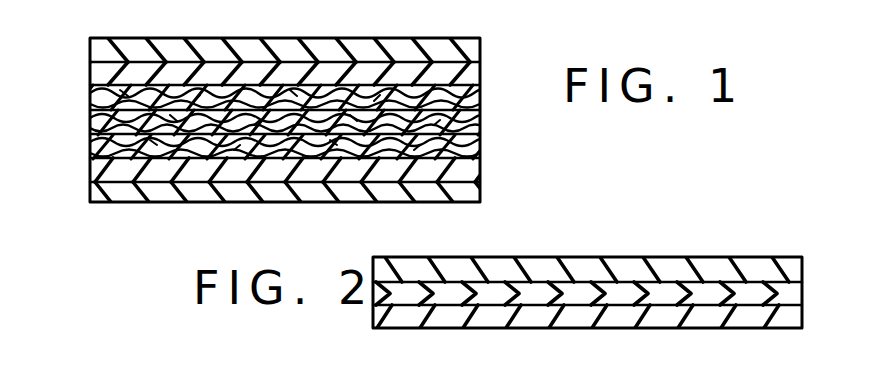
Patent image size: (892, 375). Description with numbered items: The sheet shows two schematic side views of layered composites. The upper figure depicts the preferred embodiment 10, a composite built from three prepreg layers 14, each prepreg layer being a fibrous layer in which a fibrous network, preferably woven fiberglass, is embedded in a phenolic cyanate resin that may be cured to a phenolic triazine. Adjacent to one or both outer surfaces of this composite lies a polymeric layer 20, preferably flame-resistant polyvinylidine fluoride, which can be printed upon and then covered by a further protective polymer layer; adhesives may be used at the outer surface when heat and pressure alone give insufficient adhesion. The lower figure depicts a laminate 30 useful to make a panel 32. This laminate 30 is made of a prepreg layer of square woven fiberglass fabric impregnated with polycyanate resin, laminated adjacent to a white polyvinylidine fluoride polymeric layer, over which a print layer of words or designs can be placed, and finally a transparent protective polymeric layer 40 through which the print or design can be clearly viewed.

In FIG. 1, the preferred embodiment 10 is at (363, 207).
In FIG. 1, the prepreg layers 14 is at (481, 100).
In FIG. 1, the polymeric layer 20 is at (100, 73).
In FIG. 2, the laminate 30 is at (758, 251).
In FIG. 2, the panel 32 is at (531, 341).
In FIG. 2, the protective polymeric layer 40 is at (684, 259).